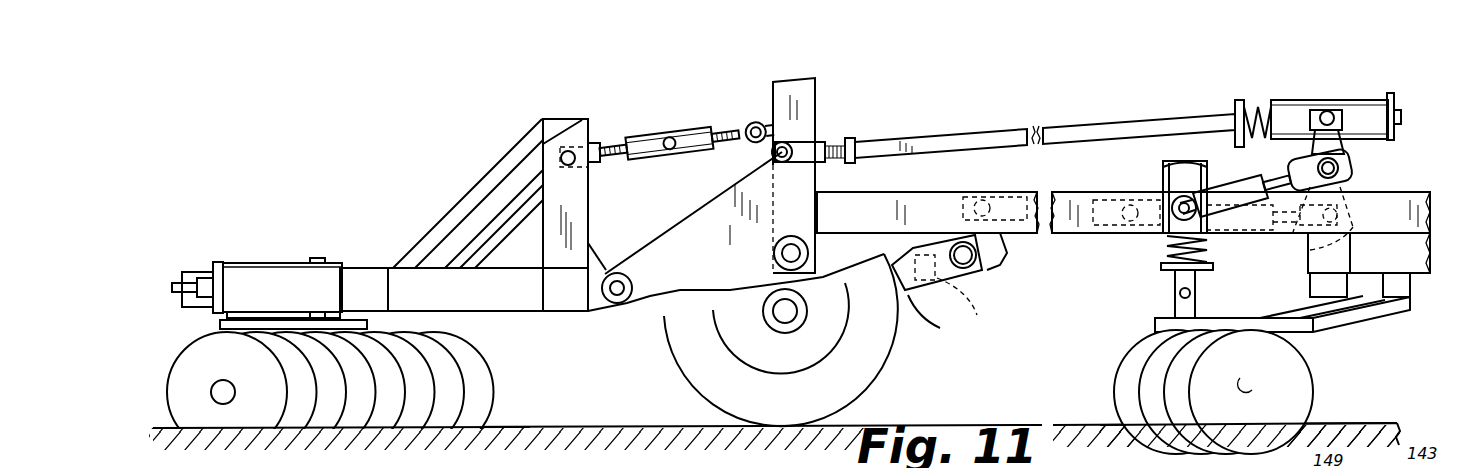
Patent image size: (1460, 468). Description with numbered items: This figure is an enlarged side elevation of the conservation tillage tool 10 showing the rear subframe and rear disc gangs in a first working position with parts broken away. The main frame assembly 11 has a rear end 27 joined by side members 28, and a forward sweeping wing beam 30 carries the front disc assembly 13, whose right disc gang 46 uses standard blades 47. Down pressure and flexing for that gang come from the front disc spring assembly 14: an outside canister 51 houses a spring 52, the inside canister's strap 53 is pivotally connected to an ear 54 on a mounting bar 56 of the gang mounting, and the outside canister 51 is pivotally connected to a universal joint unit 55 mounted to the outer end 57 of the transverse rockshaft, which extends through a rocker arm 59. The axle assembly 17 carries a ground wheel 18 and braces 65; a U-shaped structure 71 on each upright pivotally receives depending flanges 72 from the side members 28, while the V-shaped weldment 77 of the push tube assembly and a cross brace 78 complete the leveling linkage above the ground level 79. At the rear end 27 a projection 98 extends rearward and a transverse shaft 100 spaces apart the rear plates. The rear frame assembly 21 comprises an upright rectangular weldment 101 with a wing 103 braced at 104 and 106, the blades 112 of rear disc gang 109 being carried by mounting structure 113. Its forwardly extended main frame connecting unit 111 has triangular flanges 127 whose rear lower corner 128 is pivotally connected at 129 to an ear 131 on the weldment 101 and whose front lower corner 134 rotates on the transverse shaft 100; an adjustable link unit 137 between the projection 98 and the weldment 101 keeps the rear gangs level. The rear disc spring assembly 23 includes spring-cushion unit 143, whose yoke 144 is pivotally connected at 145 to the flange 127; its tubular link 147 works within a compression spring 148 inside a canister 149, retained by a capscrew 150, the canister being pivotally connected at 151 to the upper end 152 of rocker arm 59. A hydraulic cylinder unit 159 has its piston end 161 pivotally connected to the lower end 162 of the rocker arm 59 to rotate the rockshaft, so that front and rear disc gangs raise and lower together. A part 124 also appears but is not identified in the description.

The conservation tillage tool 10 is at (1045, 106).
The main frame assembly 11 is at (987, 288).
The front disc assembly 13 is at (1219, 371).
The front disc spring assembly 14 is at (1194, 238).
The axle assembly 17 is at (824, 340).
The ground wheels 18 is at (880, 375).
The rear frame assembly 21 is at (480, 215).
The rear disc spring assembly 23 is at (1313, 94).
The rear end 27 is at (800, 162).
The side members 28 is at (918, 192).
The forward sweeping wing beam 30 is at (1408, 262).
The right disc gang 46 is at (1250, 392).
The blades 47 is at (1250, 387).
The outside canister 51 is at (1163, 172).
The spring 52 is at (1167, 243).
The strap 53 is at (1161, 267).
The ear 54 is at (1175, 310).
The universal joint unit 55 is at (1265, 180).
The mounting bar 56 is at (1240, 318).
The outer end 57 is at (1352, 170).
The rocker arm 59 is at (1392, 140).
The braces 65 is at (928, 320).
The U-shaped structure 71 is at (972, 268).
The depending flanges 72 is at (1008, 253).
The V-shaped weldment 77 is at (1010, 200).
The cross brace 78 is at (965, 310).
The ground level 79 is at (628, 425).
The projection 98 is at (767, 117).
The transverse shaft 100 is at (820, 210).
The upright rectangular weldment 101 is at (590, 183).
The wing 103 is at (510, 293).
The brace 104 is at (505, 160).
The brace 106 is at (517, 192).
The rear disc gang 109 is at (371, 389).
The frame plate 111 is at (736, 260).
The blades 112 is at (495, 405).
The mounting structure 113 is at (286, 250).
The clevis 124 is at (172, 283).
The triangular flange 127 is at (728, 197).
The rear lower corner 128 is at (652, 298).
The pivotal connection 129 is at (630, 302).
The ear 131 is at (612, 272).
The front lower corner 134 is at (752, 285).
The adjustable link unit 137 is at (677, 128).
The spring-cushion unit 143 is at (1364, 94).
The yoke 144 is at (833, 142).
The pivotal connection 145 is at (790, 146).
The tubular link 147 is at (920, 143).
The compression spring 148 is at (1243, 105).
The canister 149 is at (1300, 103).
The capscrew 150 is at (1401, 113).
The pivotal connection 151 is at (1331, 115).
The upper end 152 is at (1312, 150).
The hydraulic cylinder unit 159 is at (1250, 240).
The piston end 161 is at (1329, 253).
The lower end 162 is at (1362, 212).